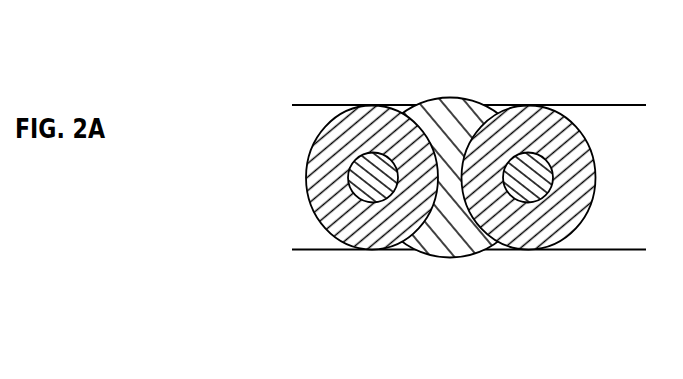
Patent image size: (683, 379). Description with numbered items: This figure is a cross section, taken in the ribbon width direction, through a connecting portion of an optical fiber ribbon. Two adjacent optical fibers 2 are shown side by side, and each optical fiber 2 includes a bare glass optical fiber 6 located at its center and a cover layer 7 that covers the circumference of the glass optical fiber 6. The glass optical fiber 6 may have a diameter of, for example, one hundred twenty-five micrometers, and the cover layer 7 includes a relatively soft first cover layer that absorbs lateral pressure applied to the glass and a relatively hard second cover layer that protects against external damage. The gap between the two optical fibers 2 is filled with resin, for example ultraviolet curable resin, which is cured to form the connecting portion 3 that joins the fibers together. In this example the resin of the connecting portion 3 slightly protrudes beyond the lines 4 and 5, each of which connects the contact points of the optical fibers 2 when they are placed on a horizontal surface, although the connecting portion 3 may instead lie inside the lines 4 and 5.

The optical fiber 2 is at (451, 235).
The connecting portion 3 is at (452, 98).
The line 4 is at (622, 250).
The line 5 is at (622, 105).
The glass optical fiber 6 is at (360, 186).
The cover layer 7 is at (389, 240).